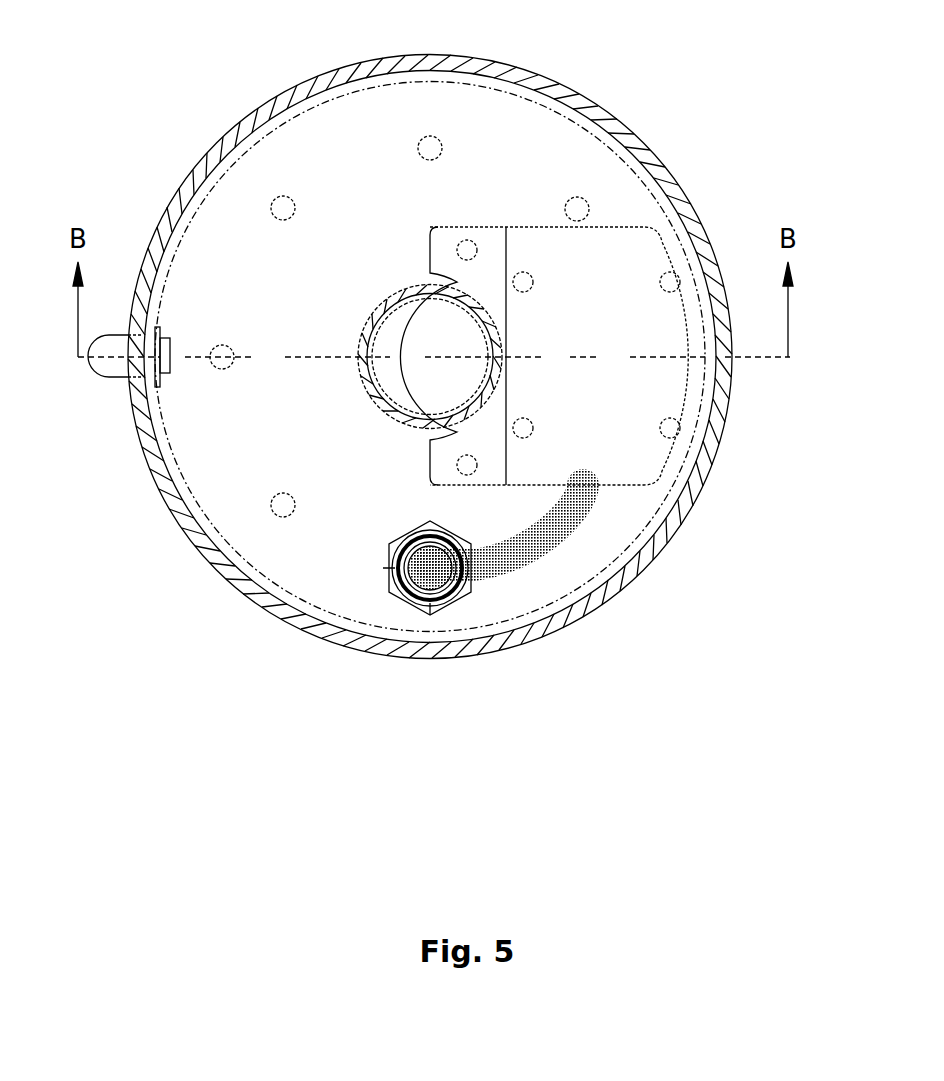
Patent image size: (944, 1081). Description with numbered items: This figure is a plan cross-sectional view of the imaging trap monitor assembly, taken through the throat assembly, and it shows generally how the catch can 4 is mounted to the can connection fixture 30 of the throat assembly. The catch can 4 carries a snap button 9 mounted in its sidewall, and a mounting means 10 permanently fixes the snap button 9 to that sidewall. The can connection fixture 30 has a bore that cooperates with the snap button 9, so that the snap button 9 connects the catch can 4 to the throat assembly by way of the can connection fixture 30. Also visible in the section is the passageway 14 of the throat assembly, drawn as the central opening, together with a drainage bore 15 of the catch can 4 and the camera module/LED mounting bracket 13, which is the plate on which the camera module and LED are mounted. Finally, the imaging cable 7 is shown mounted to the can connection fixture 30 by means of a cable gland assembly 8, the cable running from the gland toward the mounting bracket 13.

The catch can 4 is at (493, 128).
The can connection fixture 30 is at (256, 108).
The drainage bore 15 is at (284, 198).
The camera module/LED mounting bracket 13 is at (645, 255).
The passageway 14 is at (382, 410).
The snap button 9 is at (105, 378).
The mounting means 10 is at (163, 378).
The imaging cable 7 is at (540, 548).
The cable gland assembly 8 is at (413, 597).